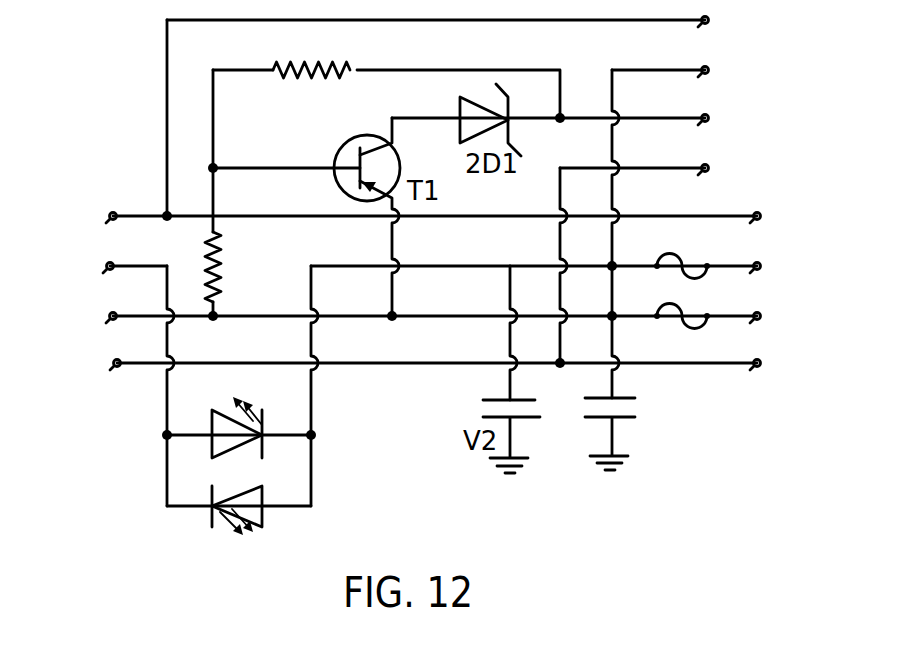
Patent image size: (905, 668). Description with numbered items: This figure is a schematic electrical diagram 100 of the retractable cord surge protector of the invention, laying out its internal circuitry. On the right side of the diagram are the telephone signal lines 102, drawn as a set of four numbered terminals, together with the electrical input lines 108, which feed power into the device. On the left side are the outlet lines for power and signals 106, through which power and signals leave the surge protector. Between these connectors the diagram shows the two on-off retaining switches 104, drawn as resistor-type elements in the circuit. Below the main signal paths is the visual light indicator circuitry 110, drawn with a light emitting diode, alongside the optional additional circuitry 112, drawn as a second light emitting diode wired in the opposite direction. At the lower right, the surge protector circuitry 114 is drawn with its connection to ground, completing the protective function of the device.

The electrical diagram 100 is at (134, 95).
The telephone signal lines 102 is at (737, 92).
The on-off retaining switches 104 is at (300, 60).
The outlet lines for power and signals 106 is at (84, 298).
The electrical input lines 108 is at (799, 284).
The visual light indicator circuitry 110 is at (158, 461).
The optional additional circuitry 112 is at (214, 513).
The surge protector circuitry 114 is at (632, 441).